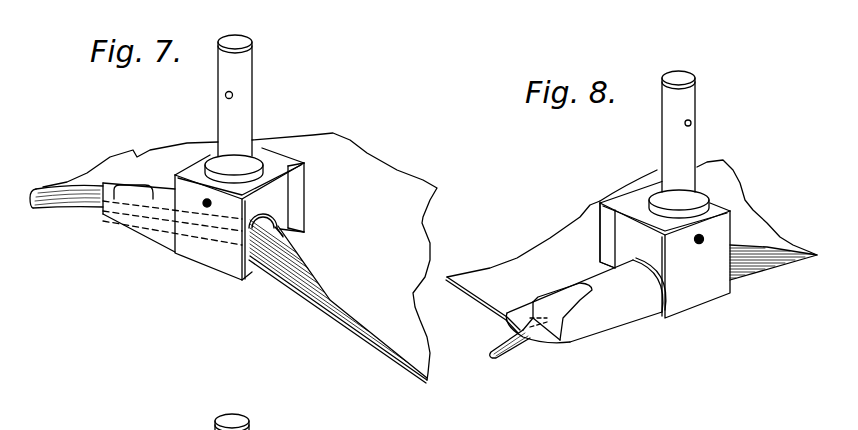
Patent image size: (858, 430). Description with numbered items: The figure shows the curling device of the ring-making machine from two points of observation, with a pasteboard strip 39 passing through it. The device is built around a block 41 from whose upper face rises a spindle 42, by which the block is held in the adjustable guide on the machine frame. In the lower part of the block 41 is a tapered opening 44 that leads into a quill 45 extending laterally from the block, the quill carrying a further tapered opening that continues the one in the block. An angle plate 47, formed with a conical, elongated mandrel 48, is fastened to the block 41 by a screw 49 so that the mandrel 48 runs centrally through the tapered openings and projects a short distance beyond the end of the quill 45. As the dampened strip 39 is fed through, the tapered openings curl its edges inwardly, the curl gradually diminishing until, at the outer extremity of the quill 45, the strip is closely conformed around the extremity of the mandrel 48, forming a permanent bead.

In FIG. 7, the pasteboard strip 39 is at (240, 258).
In FIG. 8, the pasteboard strip 39 is at (631, 246).
In FIG. 7, the block 41 is at (193, 172).
In FIG. 8, the block 41 is at (710, 295).
In FIG. 7, the spindle 42 is at (257, 102).
In FIG. 8, the spindle 42 is at (693, 140).
In FIG. 7, the tapered opening 44 is at (288, 217).
In FIG. 7, the quill 45 is at (133, 223).
In FIG. 8, the quill 45 is at (617, 313).
In FIG. 7, the angle plate 47 is at (298, 196).
In FIG. 8, the angle plate 47 is at (622, 202).
In FIG. 7, the mandrel 48 is at (279, 240).
In FIG. 8, the mandrel 48 is at (517, 347).
In FIG. 7, the screw 49 is at (207, 205).
In FIG. 8, the screw 49 is at (703, 237).